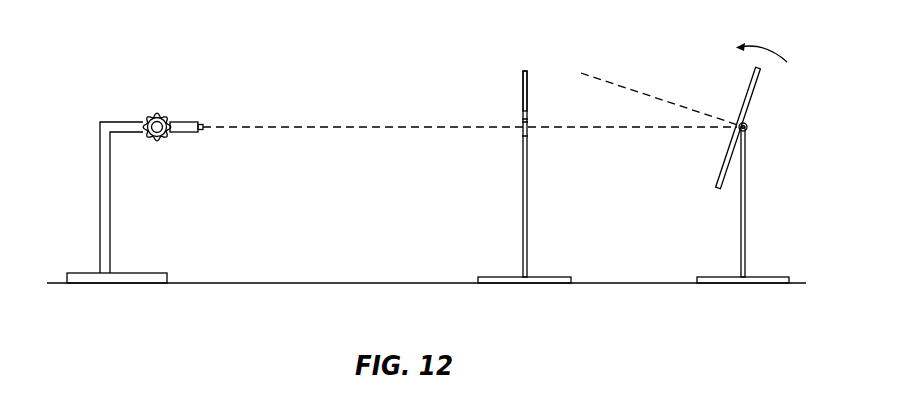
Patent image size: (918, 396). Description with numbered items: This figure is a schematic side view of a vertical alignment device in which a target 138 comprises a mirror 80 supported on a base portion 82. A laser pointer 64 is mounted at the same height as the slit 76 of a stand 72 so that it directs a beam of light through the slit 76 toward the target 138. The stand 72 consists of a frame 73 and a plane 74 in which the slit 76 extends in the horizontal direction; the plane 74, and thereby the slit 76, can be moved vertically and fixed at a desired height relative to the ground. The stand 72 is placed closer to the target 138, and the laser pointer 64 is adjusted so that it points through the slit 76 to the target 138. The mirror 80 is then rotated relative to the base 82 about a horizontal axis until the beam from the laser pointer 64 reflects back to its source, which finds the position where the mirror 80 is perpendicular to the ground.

The laser pointer 64 is at (185, 129).
The stand 72 is at (527, 95).
The frame 73 is at (497, 277).
The plane 74 is at (523, 222).
The slit 76 is at (523, 123).
The mirror 80 is at (745, 98).
The base portion 82 is at (745, 237).
The target 138 is at (755, 163).